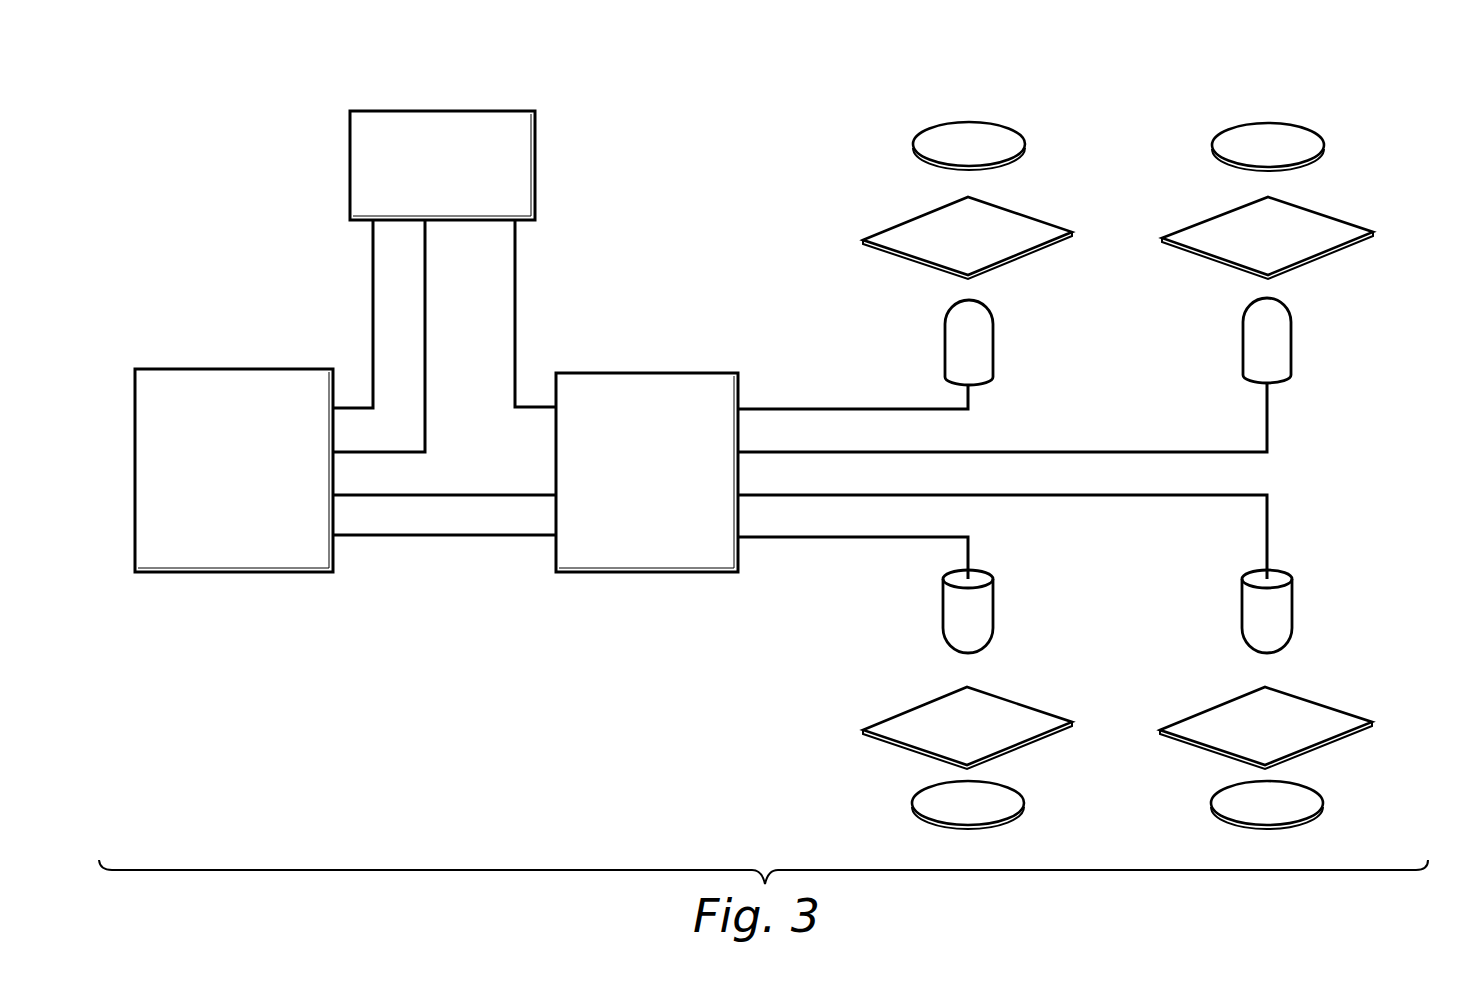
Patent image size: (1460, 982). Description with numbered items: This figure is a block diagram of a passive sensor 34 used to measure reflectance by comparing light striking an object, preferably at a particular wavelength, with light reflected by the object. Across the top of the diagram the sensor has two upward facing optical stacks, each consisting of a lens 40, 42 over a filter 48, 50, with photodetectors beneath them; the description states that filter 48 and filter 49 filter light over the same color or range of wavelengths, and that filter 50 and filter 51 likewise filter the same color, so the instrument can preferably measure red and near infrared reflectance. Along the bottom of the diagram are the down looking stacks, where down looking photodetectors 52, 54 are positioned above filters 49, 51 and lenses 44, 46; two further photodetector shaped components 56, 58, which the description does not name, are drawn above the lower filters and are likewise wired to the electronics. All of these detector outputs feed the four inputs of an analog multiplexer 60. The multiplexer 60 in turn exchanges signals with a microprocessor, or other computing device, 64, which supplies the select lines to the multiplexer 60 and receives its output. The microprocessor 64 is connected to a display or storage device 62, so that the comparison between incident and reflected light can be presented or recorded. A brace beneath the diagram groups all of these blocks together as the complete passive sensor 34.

The passive sensor 34 is at (1327, 113).
The lens 40 is at (1025, 140).
The lens 42 is at (1323, 153).
The lens 44 is at (1022, 803).
The lens 46 is at (1313, 800).
The filter 48 is at (1022, 255).
The filter 49 is at (1025, 715).
The filter 50 is at (1332, 248).
The filter 51 is at (1342, 717).
The down looking photodetector 52 is at (992, 342).
The down looking photodetector 54 is at (1292, 338).
The third sensor 56 is at (985, 617).
The fourth sensor 58 is at (1288, 613).
The analog multiplexer 60 is at (653, 373).
The display or storage device 62 is at (350, 128).
The microprocessor 64 is at (187, 369).